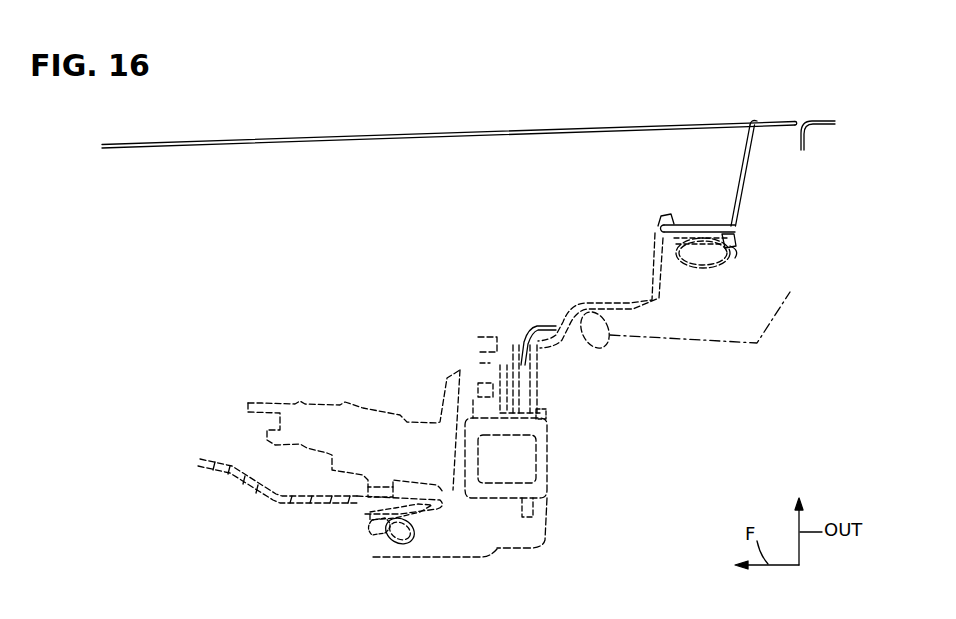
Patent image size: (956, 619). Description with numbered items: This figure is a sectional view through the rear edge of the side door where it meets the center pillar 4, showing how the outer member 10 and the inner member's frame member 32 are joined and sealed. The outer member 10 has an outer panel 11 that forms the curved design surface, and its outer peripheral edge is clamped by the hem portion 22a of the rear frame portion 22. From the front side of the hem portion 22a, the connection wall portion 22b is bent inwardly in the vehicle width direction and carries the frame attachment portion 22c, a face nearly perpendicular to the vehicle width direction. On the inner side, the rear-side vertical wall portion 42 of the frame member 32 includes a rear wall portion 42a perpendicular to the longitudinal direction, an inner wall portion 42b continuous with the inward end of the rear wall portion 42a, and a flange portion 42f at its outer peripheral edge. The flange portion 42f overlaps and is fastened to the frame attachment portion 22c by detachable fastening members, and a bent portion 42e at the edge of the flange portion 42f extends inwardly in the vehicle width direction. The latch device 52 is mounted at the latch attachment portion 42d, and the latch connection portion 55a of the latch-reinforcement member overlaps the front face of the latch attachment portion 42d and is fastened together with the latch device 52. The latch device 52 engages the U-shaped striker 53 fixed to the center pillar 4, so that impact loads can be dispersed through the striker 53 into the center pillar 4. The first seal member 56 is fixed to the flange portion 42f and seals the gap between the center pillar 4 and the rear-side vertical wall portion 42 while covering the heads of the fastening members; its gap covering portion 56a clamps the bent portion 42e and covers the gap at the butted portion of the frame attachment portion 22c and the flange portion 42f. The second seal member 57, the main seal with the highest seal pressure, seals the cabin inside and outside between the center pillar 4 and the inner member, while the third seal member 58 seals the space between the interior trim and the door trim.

The center pillar 4 is at (500, 550).
The outer member 10 is at (600, 110).
The outer panel 11 is at (317, 141).
The rear frame portion 22 is at (747, 177).
The hem portion 22a is at (776, 130).
The connection wall portion 22b is at (744, 168).
The frame attachment portion 22c is at (745, 190).
The frame member 32 is at (625, 320).
The rear-side vertical wall portion 42 is at (562, 298).
The rear wall portion 42a is at (662, 280).
The inner wall portion 42b is at (271, 504).
The latch attachment portion 42d is at (517, 340).
The bent portion 42e is at (740, 245).
The flange portion 42f is at (661, 222).
The latch device 52 is at (362, 405).
The striker 53 is at (487, 500).
The latch connection portion 55a is at (549, 324).
The first seal member 56 is at (745, 276).
The gap covering portion 56a is at (740, 237).
The second seal member 57 is at (600, 352).
The third seal member 58 is at (375, 545).